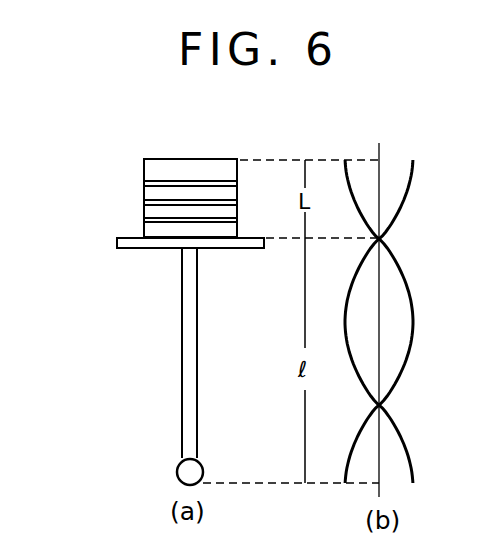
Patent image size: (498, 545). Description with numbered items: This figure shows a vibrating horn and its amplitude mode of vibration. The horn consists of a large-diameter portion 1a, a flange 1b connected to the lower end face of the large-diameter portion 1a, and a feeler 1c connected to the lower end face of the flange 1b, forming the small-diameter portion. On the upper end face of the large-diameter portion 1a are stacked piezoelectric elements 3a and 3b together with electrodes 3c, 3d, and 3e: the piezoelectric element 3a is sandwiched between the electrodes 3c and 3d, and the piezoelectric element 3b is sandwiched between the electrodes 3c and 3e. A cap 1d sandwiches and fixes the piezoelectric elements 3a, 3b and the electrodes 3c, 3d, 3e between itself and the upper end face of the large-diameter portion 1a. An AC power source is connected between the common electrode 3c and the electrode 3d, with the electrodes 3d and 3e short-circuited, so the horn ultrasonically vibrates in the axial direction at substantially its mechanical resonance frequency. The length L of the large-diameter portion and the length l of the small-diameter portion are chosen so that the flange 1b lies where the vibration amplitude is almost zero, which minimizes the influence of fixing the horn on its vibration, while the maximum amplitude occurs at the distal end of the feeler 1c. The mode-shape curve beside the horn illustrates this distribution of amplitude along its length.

The large-diameter portion 1a is at (148, 235).
The flange 1b is at (139, 243).
The feeler 1c is at (185, 363).
The cap 1d is at (145, 165).
The piezoelectric element 3a is at (150, 192).
The piezoelectric element 3b is at (150, 210).
The common electrode 3c is at (232, 202).
The electrode 3d is at (230, 183).
The electrode 3e is at (233, 220).